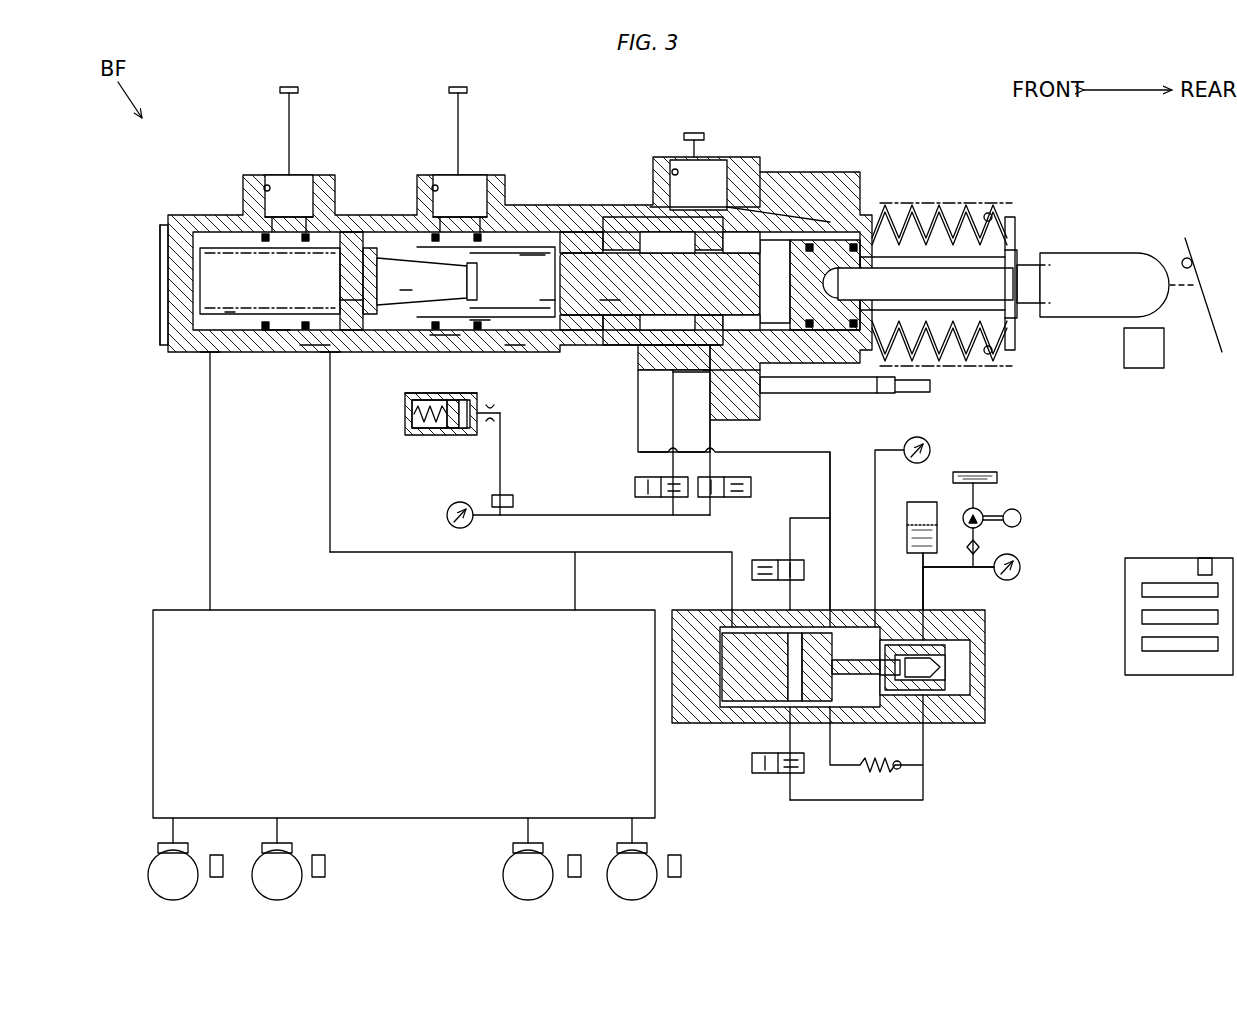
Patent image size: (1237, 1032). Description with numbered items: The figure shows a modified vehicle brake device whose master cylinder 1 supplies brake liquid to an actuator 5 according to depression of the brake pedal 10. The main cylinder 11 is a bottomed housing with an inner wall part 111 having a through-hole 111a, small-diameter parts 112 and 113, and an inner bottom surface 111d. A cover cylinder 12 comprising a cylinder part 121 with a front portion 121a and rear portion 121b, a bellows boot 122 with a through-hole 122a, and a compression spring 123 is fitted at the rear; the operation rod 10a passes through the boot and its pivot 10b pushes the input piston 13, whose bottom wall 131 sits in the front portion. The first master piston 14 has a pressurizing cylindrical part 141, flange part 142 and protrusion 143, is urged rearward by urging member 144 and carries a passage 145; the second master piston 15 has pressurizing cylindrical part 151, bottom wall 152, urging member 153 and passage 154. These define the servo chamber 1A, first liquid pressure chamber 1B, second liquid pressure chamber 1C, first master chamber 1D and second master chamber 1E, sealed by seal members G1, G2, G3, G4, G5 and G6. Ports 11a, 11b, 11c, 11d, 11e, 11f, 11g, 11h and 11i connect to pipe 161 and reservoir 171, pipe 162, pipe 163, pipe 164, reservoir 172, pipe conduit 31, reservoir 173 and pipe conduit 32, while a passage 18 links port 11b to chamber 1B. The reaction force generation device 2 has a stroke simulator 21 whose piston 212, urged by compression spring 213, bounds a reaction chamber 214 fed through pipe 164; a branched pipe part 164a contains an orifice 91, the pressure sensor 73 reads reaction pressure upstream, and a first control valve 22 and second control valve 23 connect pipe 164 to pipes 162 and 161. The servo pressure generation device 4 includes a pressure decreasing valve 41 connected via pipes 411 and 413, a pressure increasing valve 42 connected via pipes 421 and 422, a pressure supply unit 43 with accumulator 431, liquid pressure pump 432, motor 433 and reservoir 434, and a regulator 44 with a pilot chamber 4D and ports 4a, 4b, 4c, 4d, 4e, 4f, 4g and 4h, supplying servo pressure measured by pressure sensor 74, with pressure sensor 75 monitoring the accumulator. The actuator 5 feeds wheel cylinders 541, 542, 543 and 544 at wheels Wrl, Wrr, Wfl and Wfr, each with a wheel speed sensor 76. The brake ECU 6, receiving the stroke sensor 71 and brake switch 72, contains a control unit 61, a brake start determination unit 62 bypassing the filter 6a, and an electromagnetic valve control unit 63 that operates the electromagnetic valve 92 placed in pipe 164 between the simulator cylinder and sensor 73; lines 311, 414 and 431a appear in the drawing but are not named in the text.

The master cylinder 1 is at (661, 278).
The main cylinder 11 is at (190, 210).
The brake pedal 10 is at (1114, 253).
The operation rod 10a is at (1030, 253).
The pivot 10b is at (975, 265).
The cover cylinder 12 is at (974, 325).
The cylinder part 121 is at (941, 324).
The boot 122 is at (1030, 311).
The input piston 13 is at (901, 236).
The bottom wall 131 is at (845, 275).
The first master piston 14 is at (548, 352).
The pressurizing cylindrical part 141 is at (515, 232).
The flange part 142 is at (580, 215).
The protrusion 143 is at (775, 240).
The urging member 144 is at (352, 232).
The passage 145 is at (370, 248).
The second master piston 15 is at (390, 229).
The pressurizing cylindrical part 151 is at (278, 332).
The bottom wall 152 is at (352, 332).
The urging member 153 is at (222, 248).
The passage 154 is at (275, 240).
The passage 18 is at (750, 260).
The reaction force generation device 2 is at (430, 438).
The stroke simulator 21 is at (410, 330).
The piston 212 is at (452, 428).
The compression spring 213 is at (418, 428).
The reaction chamber 214 is at (463, 428).
The first control valve 22 is at (650, 476).
The second control valve 23 is at (714, 476).
The pipe conduit 31 is at (328, 497).
The pipe conduit 32 is at (208, 503).
The conduit 311 is at (640, 552).
The servo pressure generation device 4 is at (909, 616).
The pressure decreasing valve 41 is at (755, 562).
The pressure increasing valve 42 is at (752, 770).
The pressure supply unit 43 is at (989, 537).
The regulator 44 is at (985, 700).
The actuator 5 is at (182, 604).
The brake ECU 6 is at (1155, 583).
The stroke sensor 71 is at (1143, 368).
The brake switch 72 is at (1180, 262).
The pressure sensor 73 is at (475, 497).
The pressure sensor 74 is at (908, 460).
The pressure sensor 75 is at (1010, 580).
The wheel speed sensor 76 is at (223, 873).
The orifice 91 is at (500, 418).
The electromagnetic valve 92 is at (513, 500).
The inner wall part 111 is at (645, 232).
The through-hole 111a is at (635, 205).
The inner bottom surface 111d is at (158, 318).
The small-diameter part 112 is at (480, 325).
The small-diameter part 113 is at (318, 350).
The port 11a is at (710, 350).
The port 11b is at (733, 207).
The port 11c is at (670, 350).
The port 11d is at (630, 347).
The port 11e is at (514, 348).
The port 11f is at (452, 232).
The port 11g is at (332, 370).
The port 11h is at (296, 232).
The port 11i is at (205, 352).
The servo chamber 1A is at (610, 330).
The first liquid pressure chamber 1B is at (806, 393).
The second liquid pressure chamber 1C is at (548, 318).
The first master chamber 1D is at (406, 414).
The second master chamber 1E is at (232, 352).
The pipe 161 is at (712, 428).
The pipe 162 is at (673, 435).
The pipe 163 is at (638, 430).
The pipe 164 is at (565, 517).
The branched pipe part 164a is at (503, 425).
The reservoir 171 is at (695, 132).
The reservoir 172 is at (460, 118).
The reservoir 173 is at (290, 118).
The front portion 121a is at (870, 393).
The rear portion 121b is at (912, 385).
The through-hole 122a is at (1012, 250).
The compression spring 123 is at (995, 352).
The seal member G1 is at (478, 234).
The seal member G2 is at (436, 234).
The seal member G3 is at (306, 234).
The seal member G4 is at (262, 234).
The seal member G5 is at (812, 244).
The seal member G6 is at (856, 244).
The pipe 411 is at (797, 518).
The pipe 413 is at (792, 603).
The conduit 414 is at (850, 528).
The pipe 421 is at (790, 740).
The pipe 422 is at (818, 800).
The accumulator 431 is at (921, 572).
The conduit 431a is at (930, 578).
The liquid pressure pump 432 is at (960, 508).
The motor 433 is at (1015, 510).
The reservoir 434 is at (997, 478).
The port 4a is at (925, 610).
The port 4b is at (925, 725).
The port 4c is at (882, 612).
The port 4d is at (838, 612).
The port 4e is at (832, 725).
The port 4f is at (808, 620).
The port 4g is at (793, 725).
The port 4h is at (730, 610).
The pilot chamber 4D is at (755, 690).
The wheel cylinder 541 is at (180, 843).
The wheel cylinder 542 is at (283, 843).
The wheel cylinder 543 is at (533, 843).
The wheel cylinder 544 is at (636, 843).
The control unit 61 is at (1150, 583).
The brake start determination unit 62 is at (1150, 615).
The electromagnetic valve control unit 63 is at (1152, 645).
The filter 6a is at (1207, 558).
The rear left wheel Wrl is at (175, 900).
The rear right wheel Wrr is at (280, 900).
The front left wheel Wfl is at (533, 900).
The front right wheel Wfr is at (638, 900).